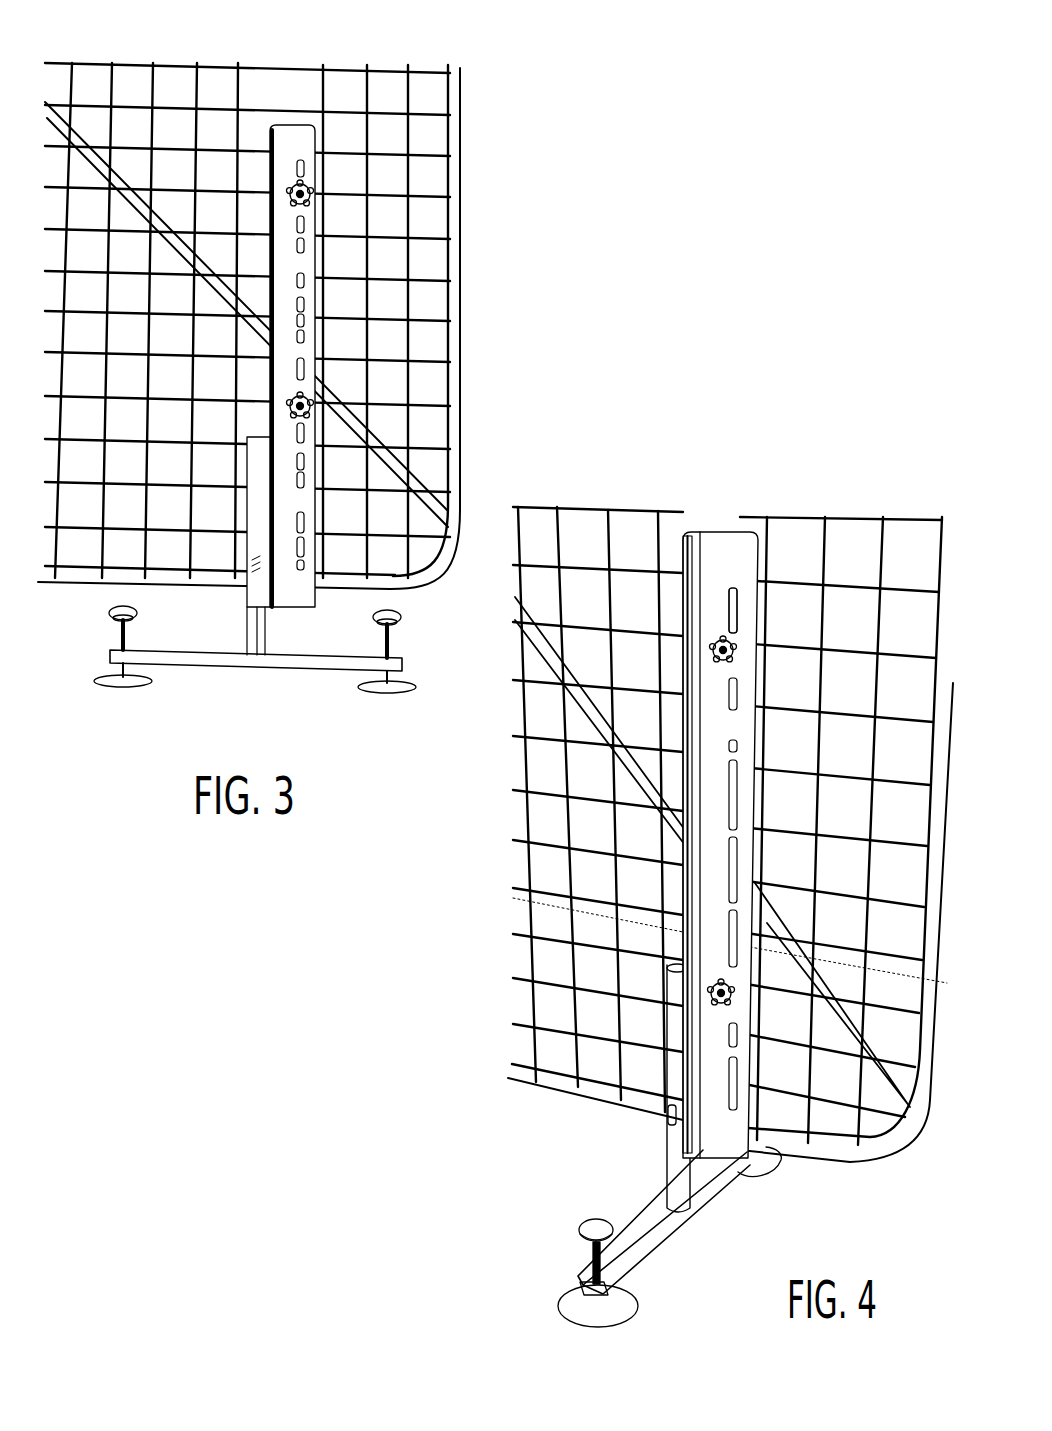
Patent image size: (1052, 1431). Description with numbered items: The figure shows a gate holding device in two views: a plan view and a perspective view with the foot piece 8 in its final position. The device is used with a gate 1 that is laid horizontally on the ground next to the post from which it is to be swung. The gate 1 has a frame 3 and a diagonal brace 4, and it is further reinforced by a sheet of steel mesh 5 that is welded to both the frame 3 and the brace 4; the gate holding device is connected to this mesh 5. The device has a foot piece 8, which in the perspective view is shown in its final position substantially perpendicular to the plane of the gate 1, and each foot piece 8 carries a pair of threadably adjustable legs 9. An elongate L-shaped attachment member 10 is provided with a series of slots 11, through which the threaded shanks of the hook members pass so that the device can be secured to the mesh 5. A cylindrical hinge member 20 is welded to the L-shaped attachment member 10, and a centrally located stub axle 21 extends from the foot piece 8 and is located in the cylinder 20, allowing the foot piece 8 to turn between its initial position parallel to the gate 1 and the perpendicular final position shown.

In FIG. 3, the gate 1 is at (314, 367).
In FIG. 4, the gate 1 is at (713, 856).
In FIG. 3, the frame 3 is at (462, 184).
In FIG. 4, the frame 3 is at (542, 1082).
In FIG. 3, the diagonal brace 4 is at (60, 127).
In FIG. 3, the sheet of steel mesh 5 is at (388, 73).
In FIG. 3, the foot piece 8 is at (200, 660).
In FIG. 4, the foot piece 8 is at (712, 1190).
In FIG. 3, the threadably adjustable legs 9 is at (393, 637).
In FIG. 4, the threadably adjustable legs 9 is at (566, 1258).
In FIG. 3, the L-shaped attachment member 10 is at (302, 598).
In FIG. 4, the L-shaped attachment member 10 is at (735, 545).
In FIG. 4, the slots 11 is at (735, 600).
In FIG. 3, the cylindrical hinge member 20 is at (252, 595).
In FIG. 3, the stub axle 21 is at (262, 632).